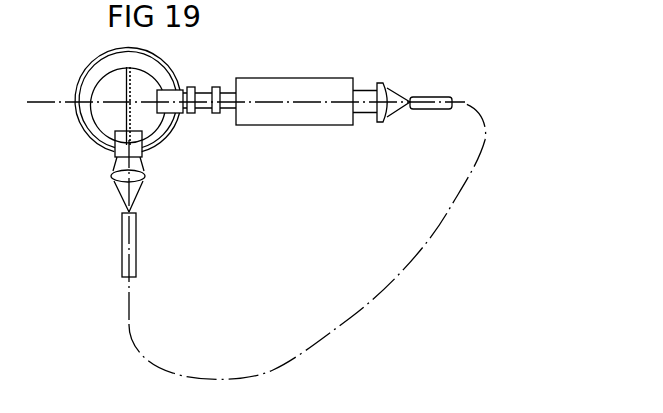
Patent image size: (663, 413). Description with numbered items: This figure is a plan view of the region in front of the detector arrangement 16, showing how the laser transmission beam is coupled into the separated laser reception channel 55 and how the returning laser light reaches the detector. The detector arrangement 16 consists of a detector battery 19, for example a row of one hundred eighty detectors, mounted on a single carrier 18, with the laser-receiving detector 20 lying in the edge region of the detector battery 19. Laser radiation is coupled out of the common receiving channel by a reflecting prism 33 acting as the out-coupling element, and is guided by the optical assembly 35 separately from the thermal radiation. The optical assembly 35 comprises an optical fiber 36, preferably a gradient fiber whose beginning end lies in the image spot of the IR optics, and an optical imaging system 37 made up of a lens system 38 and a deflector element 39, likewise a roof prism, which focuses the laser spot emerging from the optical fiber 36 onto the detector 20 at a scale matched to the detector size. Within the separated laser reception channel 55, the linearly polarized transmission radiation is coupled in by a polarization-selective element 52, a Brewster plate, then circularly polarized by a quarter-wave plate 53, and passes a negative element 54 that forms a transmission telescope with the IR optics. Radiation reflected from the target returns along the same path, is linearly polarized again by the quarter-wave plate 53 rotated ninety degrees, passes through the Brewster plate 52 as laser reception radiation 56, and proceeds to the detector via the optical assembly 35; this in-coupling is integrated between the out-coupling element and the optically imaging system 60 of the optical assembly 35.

The detector arrangement 16 is at (72, 64).
The carrier 18 is at (105, 117).
The detector battery 19 is at (131, 76).
The detector 20 is at (142, 137).
The reflecting prism 33 is at (178, 115).
The optical assembly 35 is at (122, 355).
The optical fiber 36 is at (122, 245).
The optical imaging system 37 is at (102, 171).
The lens system 38 is at (145, 177).
The deflector element 39 is at (113, 152).
The polarization-selective element 52 is at (332, 123).
The quarter-wave plate 53 is at (218, 114).
The negative element 54 is at (191, 86).
The separated laser reception channel 55 is at (236, 78).
The laser reception radiation 56 is at (365, 90).
The optically imaging system 60 is at (383, 122).